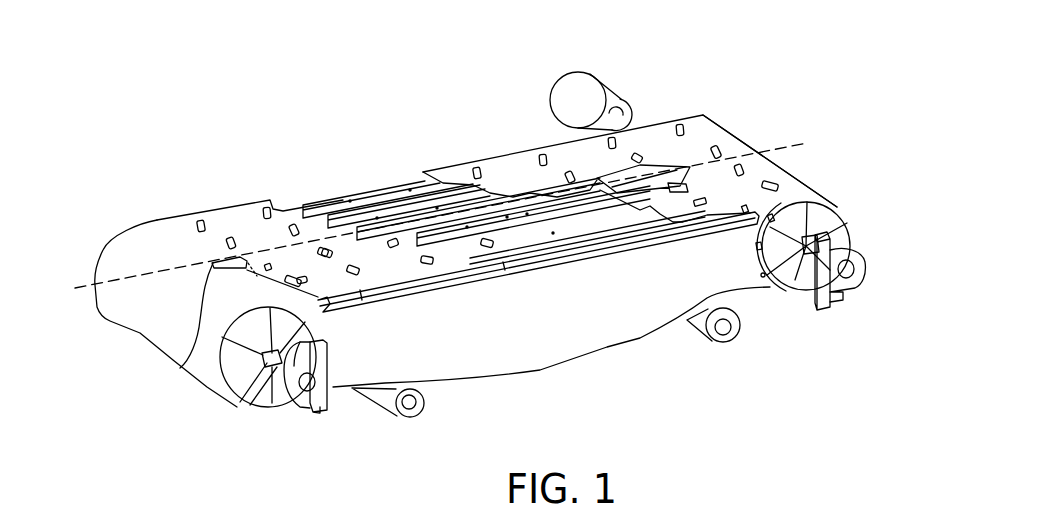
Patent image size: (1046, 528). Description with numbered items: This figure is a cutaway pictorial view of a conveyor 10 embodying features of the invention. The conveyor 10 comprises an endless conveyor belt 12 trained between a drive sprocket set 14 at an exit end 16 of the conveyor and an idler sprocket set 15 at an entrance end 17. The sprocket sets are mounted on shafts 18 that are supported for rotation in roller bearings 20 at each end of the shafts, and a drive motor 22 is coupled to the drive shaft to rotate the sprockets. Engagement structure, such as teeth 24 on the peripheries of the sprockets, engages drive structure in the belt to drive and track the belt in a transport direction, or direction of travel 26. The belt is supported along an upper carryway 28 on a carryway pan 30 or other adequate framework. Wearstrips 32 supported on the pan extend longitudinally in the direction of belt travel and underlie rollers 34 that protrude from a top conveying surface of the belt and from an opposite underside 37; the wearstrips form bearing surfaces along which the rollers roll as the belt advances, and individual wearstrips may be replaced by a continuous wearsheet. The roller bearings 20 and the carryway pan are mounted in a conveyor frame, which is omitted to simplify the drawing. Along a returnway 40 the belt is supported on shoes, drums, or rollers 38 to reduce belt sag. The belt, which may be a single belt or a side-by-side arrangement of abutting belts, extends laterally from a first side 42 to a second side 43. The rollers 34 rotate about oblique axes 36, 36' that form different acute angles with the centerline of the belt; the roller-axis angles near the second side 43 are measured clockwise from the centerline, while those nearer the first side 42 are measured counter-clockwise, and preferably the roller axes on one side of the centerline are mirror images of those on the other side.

The conveyor 10 is at (348, 62).
The endless conveyor belt 12 is at (692, 117).
The drive sprocket set 14 is at (790, 285).
The idler sprocket set 15 is at (267, 400).
The exit end 16 is at (803, 183).
The entrance end 17 is at (155, 222).
The shafts 18 is at (257, 398).
The roller bearings 20 is at (853, 281).
The drive motor 22 is at (587, 79).
The teeth 24 is at (763, 278).
The direction of travel 26 is at (600, 168).
The upper carryway 28 is at (500, 163).
The carryway pan 30 is at (618, 247).
The wearstrips 32 is at (553, 245).
The rollers 34 is at (420, 260).
The oblique axis 36 is at (736, 236).
The oblique axis 36' is at (321, 282).
The underside 37 is at (360, 295).
The rollers 38 is at (722, 342).
The returnway 40 is at (543, 352).
The first side 42 is at (437, 172).
The second side 43 is at (505, 256).